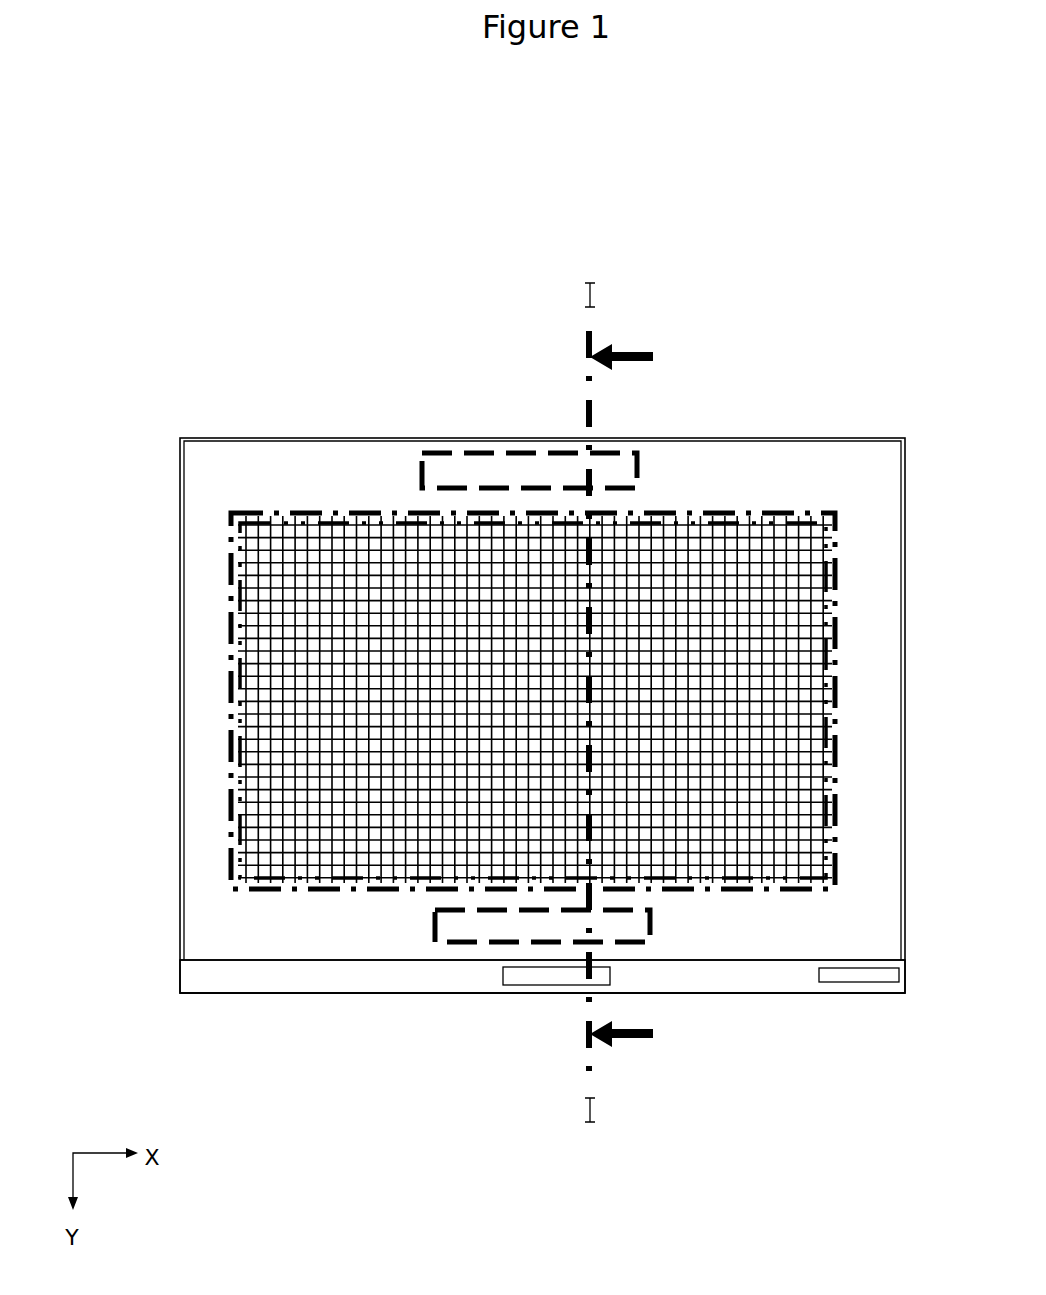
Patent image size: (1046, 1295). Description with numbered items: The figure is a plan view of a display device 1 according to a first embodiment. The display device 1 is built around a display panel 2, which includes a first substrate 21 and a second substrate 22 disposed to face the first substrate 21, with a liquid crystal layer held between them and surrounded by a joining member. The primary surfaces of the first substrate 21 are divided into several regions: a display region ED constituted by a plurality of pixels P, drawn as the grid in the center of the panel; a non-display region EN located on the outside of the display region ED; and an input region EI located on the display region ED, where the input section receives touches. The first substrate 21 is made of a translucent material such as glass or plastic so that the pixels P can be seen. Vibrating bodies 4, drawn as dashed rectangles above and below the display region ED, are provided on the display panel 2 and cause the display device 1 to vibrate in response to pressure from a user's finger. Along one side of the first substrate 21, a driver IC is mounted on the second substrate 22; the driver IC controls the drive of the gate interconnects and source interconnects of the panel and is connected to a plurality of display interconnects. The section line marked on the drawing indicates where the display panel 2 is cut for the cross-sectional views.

The display device 1 is at (590, 227).
The display panel 2 is at (542, 1055).
The first substrate 21 is at (715, 960).
The second substrate 22 is at (748, 995).
The vibrating bodies 4 is at (465, 466).
The driver IC is at (520, 980).
The pixels P is at (535, 609).
The input region EI is at (333, 520).
The non-display region EN is at (683, 478).
The display region ED is at (772, 510).